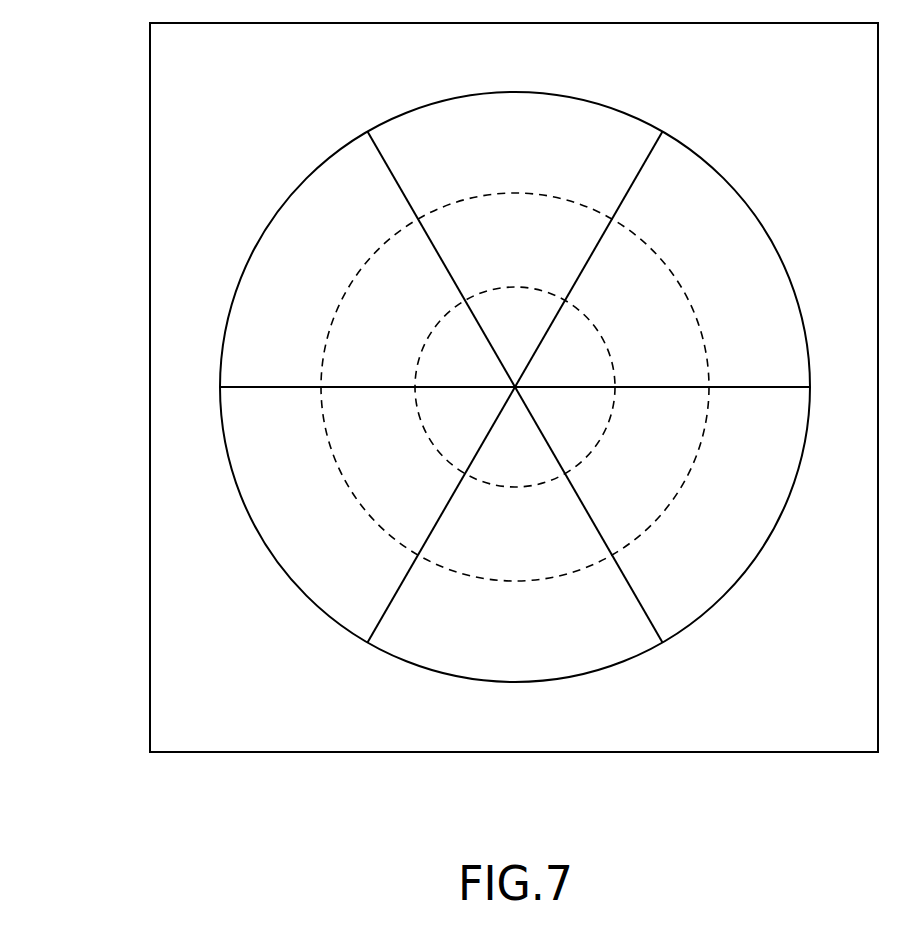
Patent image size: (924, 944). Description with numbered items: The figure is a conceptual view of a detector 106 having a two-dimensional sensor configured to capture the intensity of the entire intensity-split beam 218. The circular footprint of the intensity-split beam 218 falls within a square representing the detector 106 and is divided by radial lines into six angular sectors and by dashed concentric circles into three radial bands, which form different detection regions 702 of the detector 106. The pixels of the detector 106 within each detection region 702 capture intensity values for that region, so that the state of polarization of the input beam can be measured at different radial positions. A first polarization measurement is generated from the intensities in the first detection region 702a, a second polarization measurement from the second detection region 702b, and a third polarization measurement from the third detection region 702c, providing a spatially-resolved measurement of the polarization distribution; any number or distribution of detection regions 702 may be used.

The detector 106 is at (150, 120).
The intensity-split beam 218 is at (700, 160).
The detection regions 702 is at (775, 327).
The first detection region 702a is at (483, 290).
The second detection region 702b is at (407, 518).
The third detection region 702c is at (603, 642).